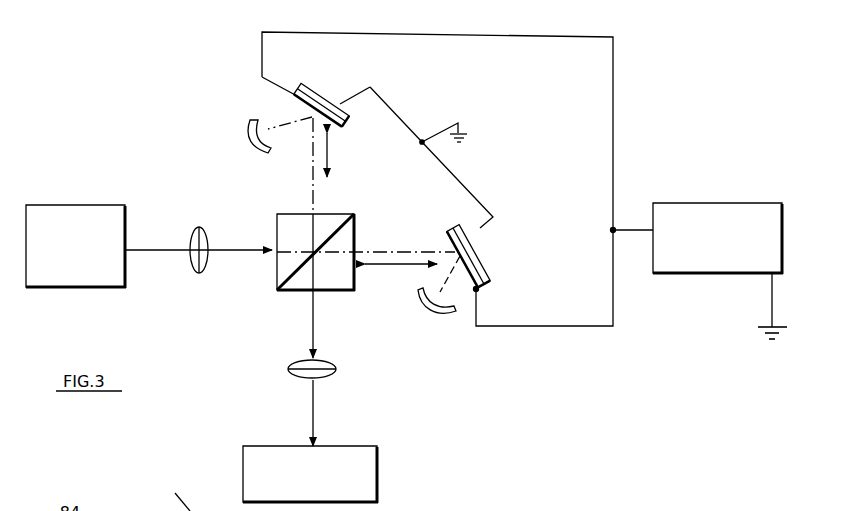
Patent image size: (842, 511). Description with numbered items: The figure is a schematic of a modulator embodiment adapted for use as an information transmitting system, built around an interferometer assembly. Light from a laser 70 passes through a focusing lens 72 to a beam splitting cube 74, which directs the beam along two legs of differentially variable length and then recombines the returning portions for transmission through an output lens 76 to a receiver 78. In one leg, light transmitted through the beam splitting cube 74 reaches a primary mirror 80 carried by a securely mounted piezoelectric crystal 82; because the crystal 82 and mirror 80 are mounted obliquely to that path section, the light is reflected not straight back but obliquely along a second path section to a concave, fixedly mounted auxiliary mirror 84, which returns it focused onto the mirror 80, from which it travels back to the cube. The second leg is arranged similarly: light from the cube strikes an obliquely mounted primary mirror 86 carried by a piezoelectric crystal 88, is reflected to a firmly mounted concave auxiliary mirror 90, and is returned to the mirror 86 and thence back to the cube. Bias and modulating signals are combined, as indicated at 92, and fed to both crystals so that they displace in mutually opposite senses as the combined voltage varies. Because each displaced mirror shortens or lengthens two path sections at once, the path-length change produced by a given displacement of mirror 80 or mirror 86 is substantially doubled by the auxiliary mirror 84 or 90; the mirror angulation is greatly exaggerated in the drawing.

The laser 70 is at (80, 223).
The focusing lens 72 is at (194, 262).
The beam splitting cube 74 is at (277, 273).
The output lens 76 is at (326, 376).
The receiver 78 is at (367, 474).
The primary mirror 80 is at (449, 243).
The piezoelectric crystal 82 is at (476, 258).
The auxiliary mirror 84 is at (425, 300).
The primary mirror 86 is at (300, 107).
The piezoelectric crystal 88 is at (315, 87).
The auxiliary mirror 90 is at (250, 135).
The bias and modulation source 92 is at (706, 214).